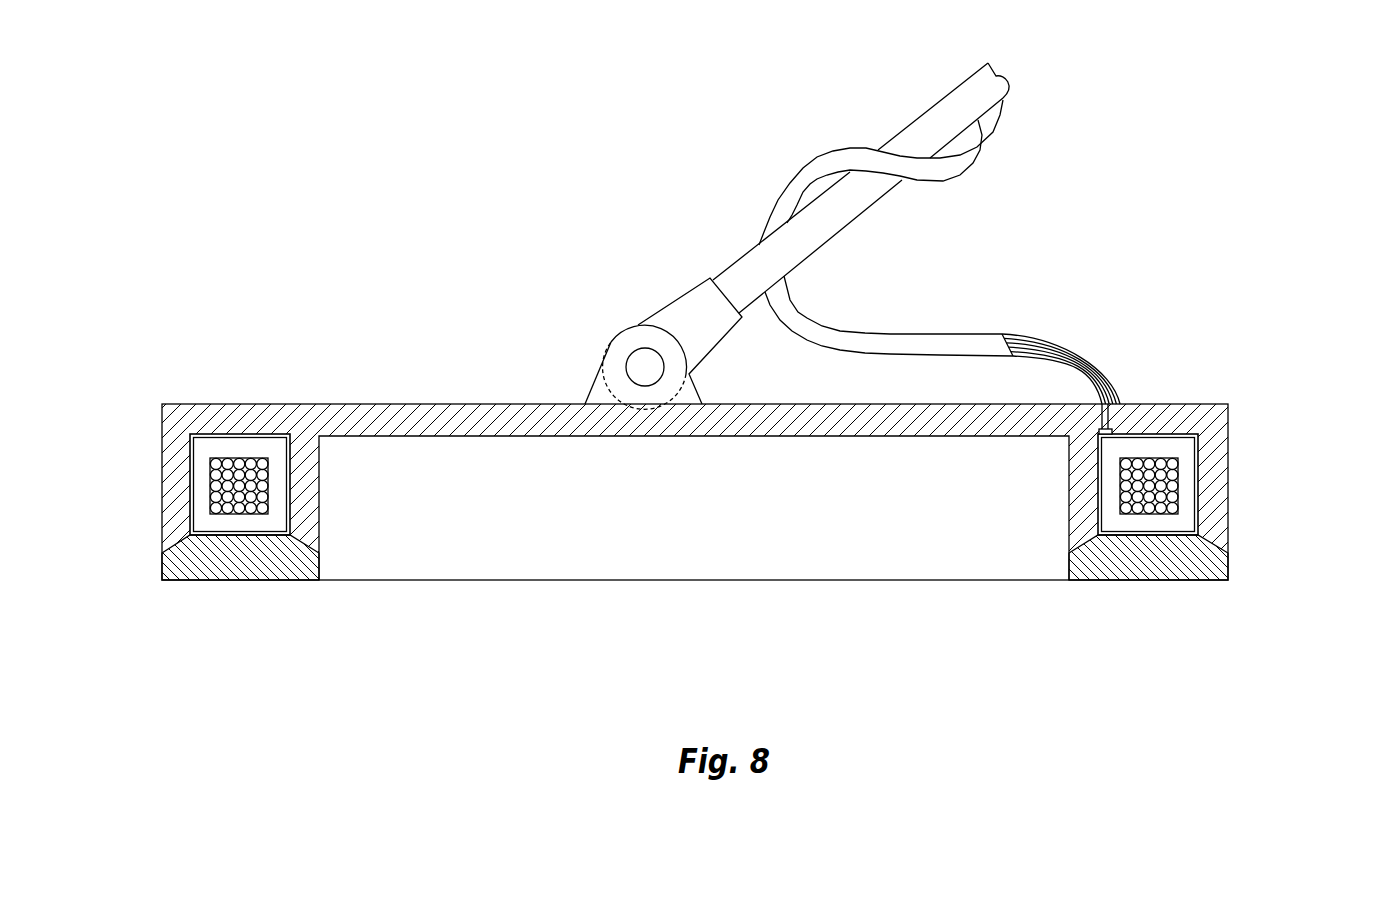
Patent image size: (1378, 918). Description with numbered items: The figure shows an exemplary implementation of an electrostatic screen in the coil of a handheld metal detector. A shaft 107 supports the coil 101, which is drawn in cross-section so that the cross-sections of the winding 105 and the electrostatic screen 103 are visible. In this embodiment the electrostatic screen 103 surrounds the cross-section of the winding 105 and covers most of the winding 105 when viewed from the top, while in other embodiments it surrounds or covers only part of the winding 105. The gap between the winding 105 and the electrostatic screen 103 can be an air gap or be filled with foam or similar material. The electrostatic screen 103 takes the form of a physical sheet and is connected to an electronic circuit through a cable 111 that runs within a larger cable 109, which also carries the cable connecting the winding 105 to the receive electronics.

The coil 101 is at (367, 405).
The electrostatic screen 103 is at (290, 483).
The winding 105 is at (238, 487).
The shaft 107 is at (938, 118).
The larger cable 109 is at (960, 342).
The cable 111 is at (1070, 362).